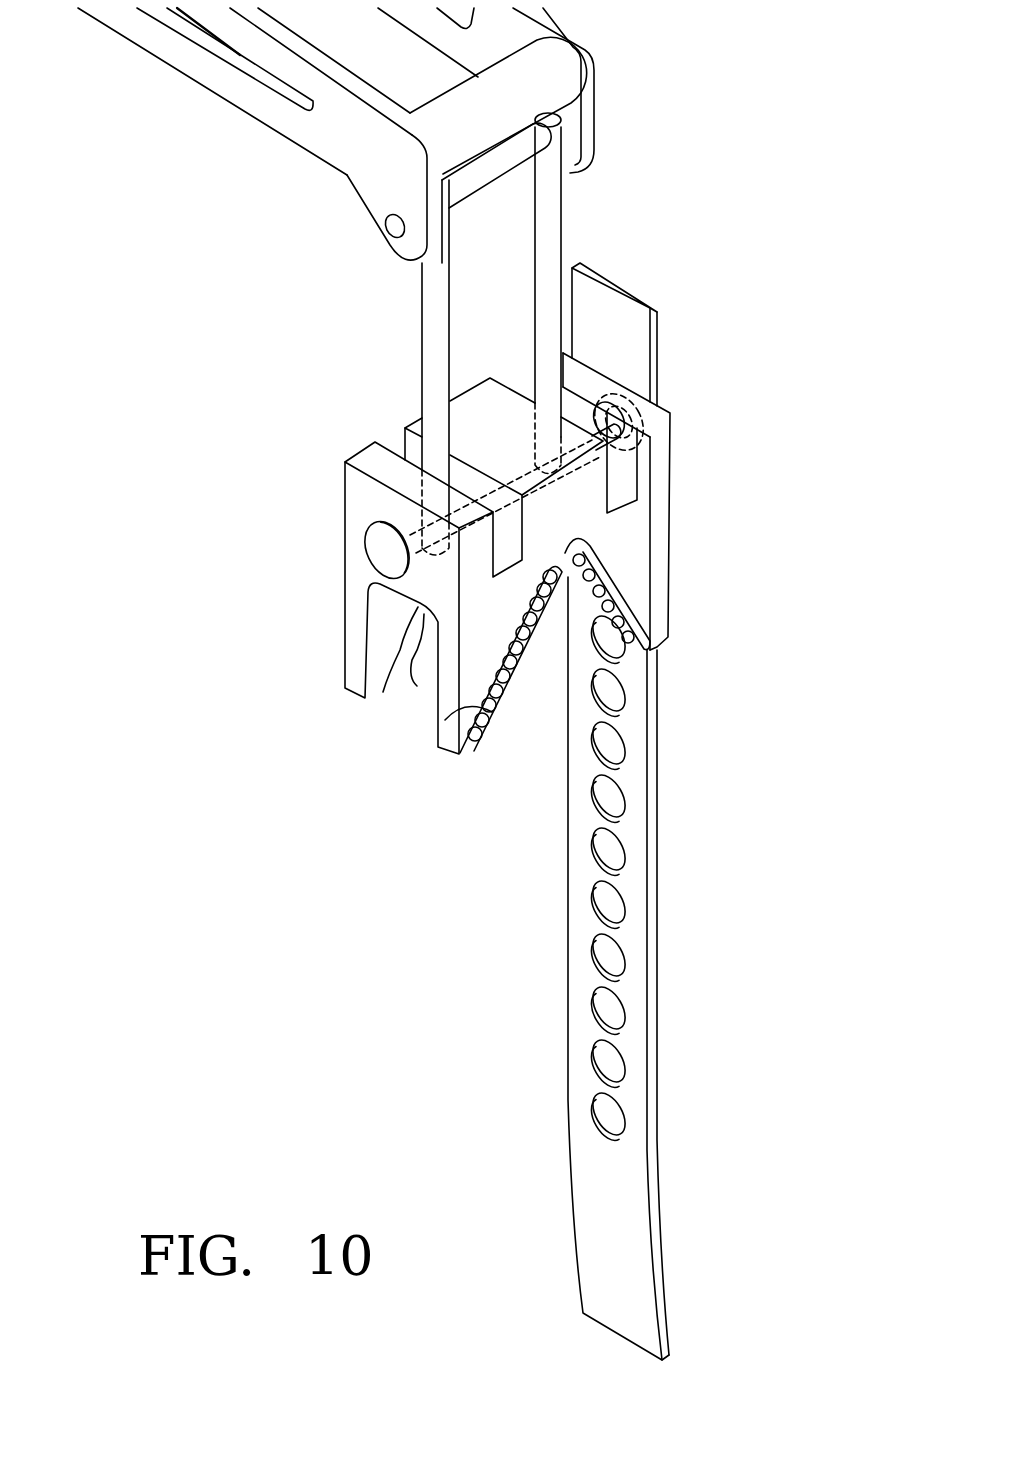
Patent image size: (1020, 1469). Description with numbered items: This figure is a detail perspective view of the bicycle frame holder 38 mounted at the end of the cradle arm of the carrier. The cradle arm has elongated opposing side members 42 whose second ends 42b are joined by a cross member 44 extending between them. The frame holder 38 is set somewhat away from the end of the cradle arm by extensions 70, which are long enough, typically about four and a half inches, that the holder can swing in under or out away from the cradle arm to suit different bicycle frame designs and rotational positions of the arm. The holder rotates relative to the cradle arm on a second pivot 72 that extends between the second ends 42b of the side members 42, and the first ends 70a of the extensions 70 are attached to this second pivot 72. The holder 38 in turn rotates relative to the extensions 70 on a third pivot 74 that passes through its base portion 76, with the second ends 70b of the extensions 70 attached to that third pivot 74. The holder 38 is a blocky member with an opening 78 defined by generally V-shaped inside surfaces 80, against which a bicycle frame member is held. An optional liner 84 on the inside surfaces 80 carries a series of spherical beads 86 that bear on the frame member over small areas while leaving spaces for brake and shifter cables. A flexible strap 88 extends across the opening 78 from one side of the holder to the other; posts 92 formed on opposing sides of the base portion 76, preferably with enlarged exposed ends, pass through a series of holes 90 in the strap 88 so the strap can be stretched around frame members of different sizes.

The bicycle frame holder 38 is at (222, 467).
The side members 42 is at (153, 48).
The second ends of side members 42b is at (372, 217).
The cross member 44 is at (453, 97).
The extensions 70 is at (550, 294).
The first ends of extensions 70a is at (557, 143).
The second ends of extensions 70b is at (562, 483).
The second pivot 72 is at (395, 228).
The third pivot 74 is at (520, 471).
The base portion 76 is at (655, 485).
The opening 78 is at (548, 657).
The inside surfaces 80 is at (462, 714).
The liner 84 is at (598, 556).
The beads 86 is at (382, 690).
The strap 88 is at (582, 977).
The holes 90 is at (607, 850).
The posts 92 is at (362, 562).